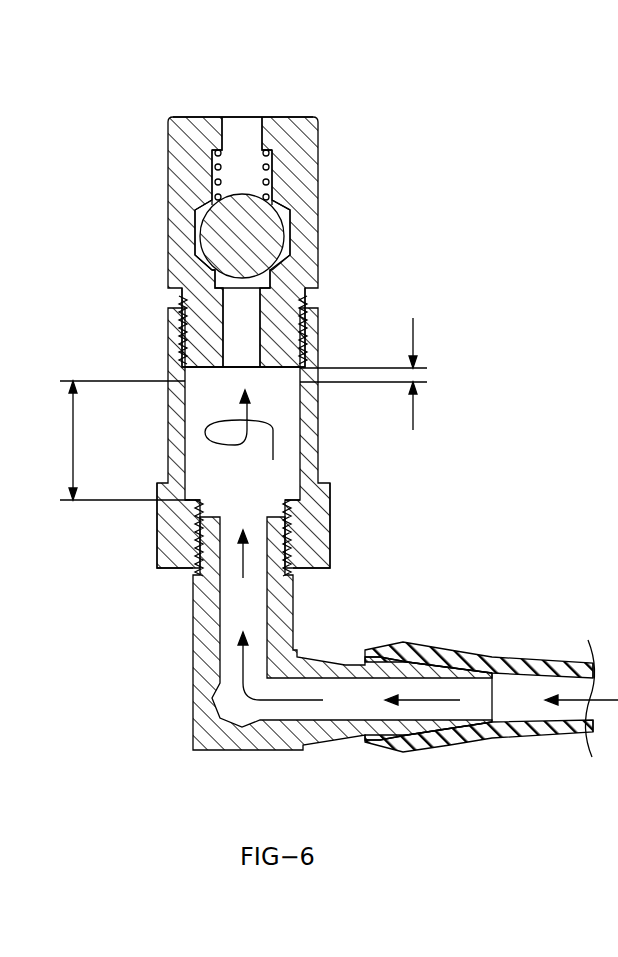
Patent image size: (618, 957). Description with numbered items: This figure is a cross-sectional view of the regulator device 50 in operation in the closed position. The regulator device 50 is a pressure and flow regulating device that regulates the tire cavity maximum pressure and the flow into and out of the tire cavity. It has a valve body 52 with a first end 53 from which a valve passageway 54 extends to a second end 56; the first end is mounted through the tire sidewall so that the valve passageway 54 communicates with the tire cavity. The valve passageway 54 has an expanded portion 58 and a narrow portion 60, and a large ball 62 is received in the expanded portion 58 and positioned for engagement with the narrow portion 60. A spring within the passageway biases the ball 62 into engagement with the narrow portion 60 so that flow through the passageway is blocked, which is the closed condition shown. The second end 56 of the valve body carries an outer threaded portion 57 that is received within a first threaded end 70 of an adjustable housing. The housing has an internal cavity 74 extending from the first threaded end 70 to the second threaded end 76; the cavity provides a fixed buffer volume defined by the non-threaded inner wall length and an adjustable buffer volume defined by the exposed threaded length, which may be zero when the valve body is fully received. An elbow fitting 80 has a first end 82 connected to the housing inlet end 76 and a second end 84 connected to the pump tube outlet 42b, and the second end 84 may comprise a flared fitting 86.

The regulator device 50 is at (110, 351).
The valve body 52 is at (168, 165).
The first end 53 is at (292, 117).
The valve passageway 54 is at (222, 165).
The second end 56 is at (276, 348).
The outer threaded portion 57 is at (304, 310).
The expanded portion 58 is at (289, 236).
The narrow portion 60 is at (213, 258).
The ball 62 is at (262, 222).
The first threaded end 70 is at (176, 332).
The internal cavity 74 is at (250, 472).
The second threaded end 76 is at (330, 526).
The first end 82 is at (205, 534).
The elbow fitting 80 is at (345, 634).
The second end 84 is at (486, 724).
The flared fitting 86 is at (422, 728).
The pump tube outlet 42b is at (478, 652).